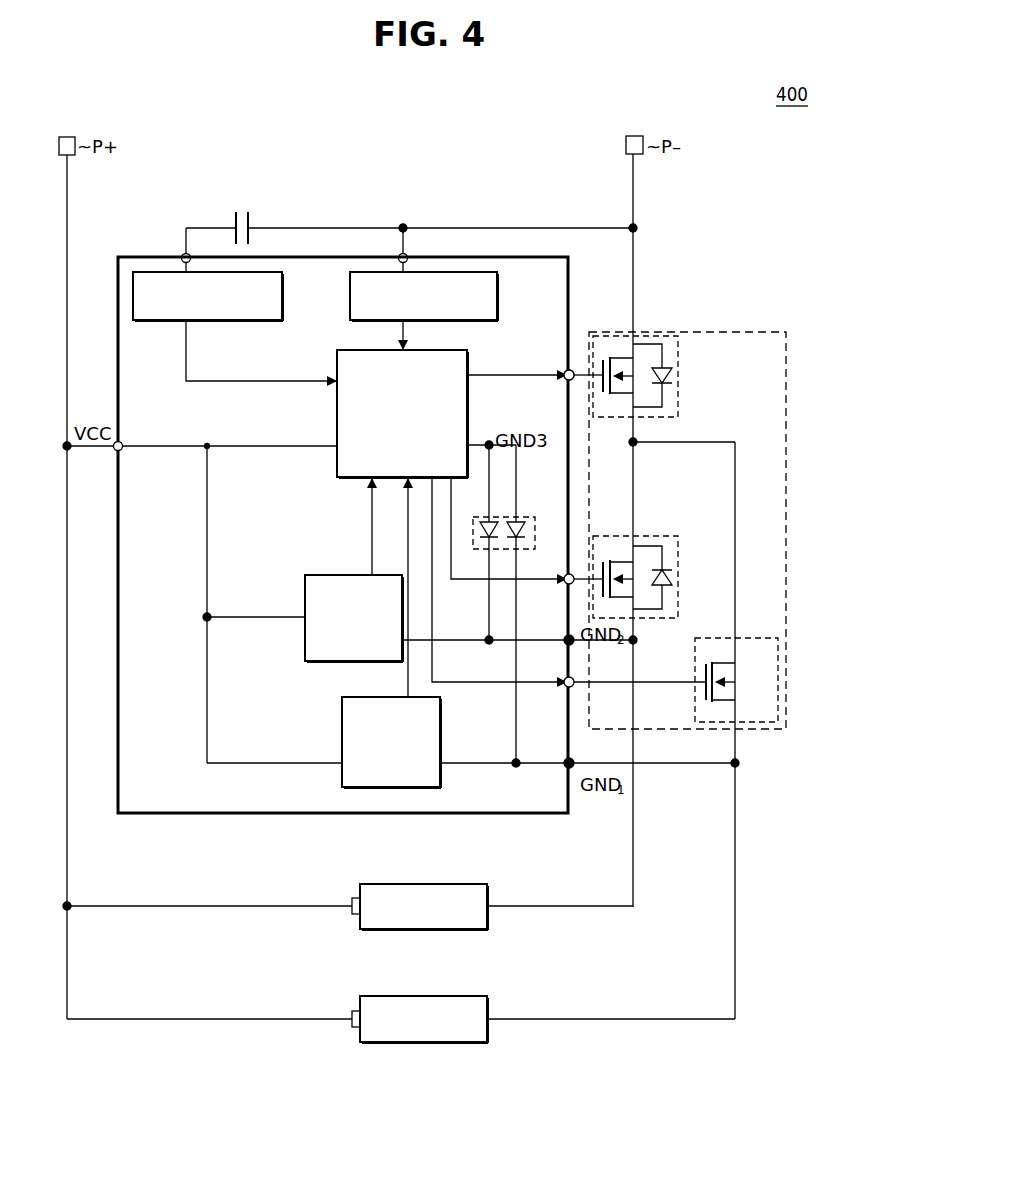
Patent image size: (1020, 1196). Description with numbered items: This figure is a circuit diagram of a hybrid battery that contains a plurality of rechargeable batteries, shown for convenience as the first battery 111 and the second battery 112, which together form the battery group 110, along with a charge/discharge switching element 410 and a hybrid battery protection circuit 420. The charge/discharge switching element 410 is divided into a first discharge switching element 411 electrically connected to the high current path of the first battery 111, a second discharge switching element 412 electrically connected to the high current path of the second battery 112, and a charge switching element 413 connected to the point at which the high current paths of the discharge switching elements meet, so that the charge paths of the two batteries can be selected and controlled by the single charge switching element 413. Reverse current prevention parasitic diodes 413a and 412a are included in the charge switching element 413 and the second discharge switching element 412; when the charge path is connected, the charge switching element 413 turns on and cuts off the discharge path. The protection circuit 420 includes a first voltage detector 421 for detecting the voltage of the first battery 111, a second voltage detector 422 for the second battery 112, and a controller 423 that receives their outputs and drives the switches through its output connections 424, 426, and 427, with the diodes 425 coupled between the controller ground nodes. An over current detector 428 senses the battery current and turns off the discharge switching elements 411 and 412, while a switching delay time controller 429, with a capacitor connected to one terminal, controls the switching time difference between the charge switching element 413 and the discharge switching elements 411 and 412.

The battery cell unit 110 is at (474, 963).
The first battery 111 is at (488, 1005).
The second battery 112 is at (488, 920).
The charge/discharge switching element 410 is at (792, 570).
The first discharge switching element 411 is at (780, 692).
The second discharge switching element 412 is at (651, 535).
The reverse current prevention parasitic diode 412a is at (672, 580).
The charge switching element 413 is at (617, 332).
The reverse current prevention parasitic diode 413a is at (664, 366).
The hybrid battery protection circuit 420 is at (450, 248).
The first voltage detector 421 is at (382, 788).
The second voltage detector 422 is at (328, 574).
The controller 423 is at (336, 413).
The first output terminal / GND3 node 424 is at (489, 440).
The diodes 425 is at (536, 532).
The GND2 terminal 426 is at (565, 640).
The GND1 terminal 427 is at (565, 766).
The over current detector 428 is at (497, 297).
The switching delay time controller 429 is at (282, 297).